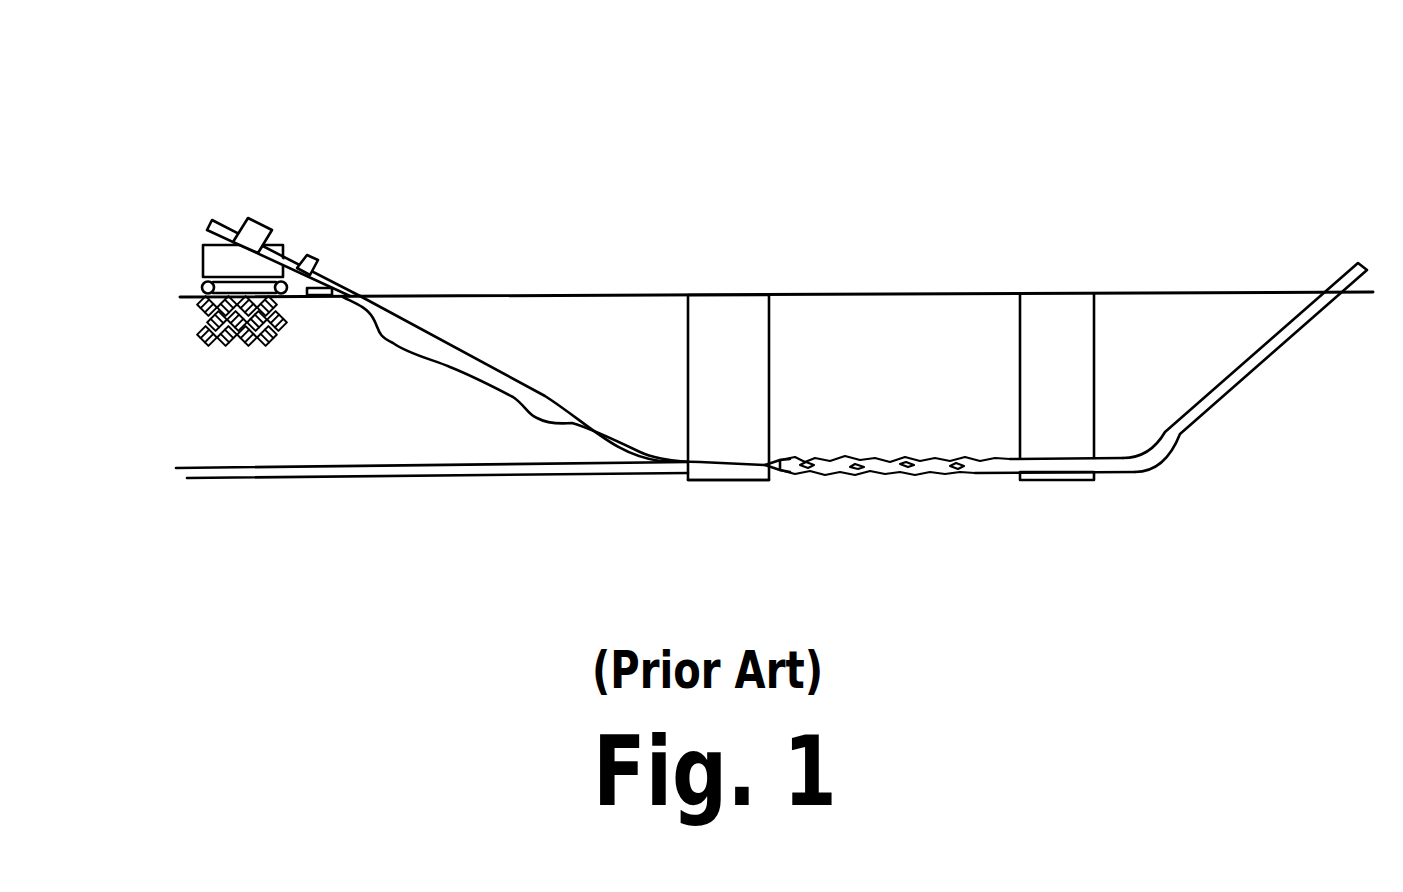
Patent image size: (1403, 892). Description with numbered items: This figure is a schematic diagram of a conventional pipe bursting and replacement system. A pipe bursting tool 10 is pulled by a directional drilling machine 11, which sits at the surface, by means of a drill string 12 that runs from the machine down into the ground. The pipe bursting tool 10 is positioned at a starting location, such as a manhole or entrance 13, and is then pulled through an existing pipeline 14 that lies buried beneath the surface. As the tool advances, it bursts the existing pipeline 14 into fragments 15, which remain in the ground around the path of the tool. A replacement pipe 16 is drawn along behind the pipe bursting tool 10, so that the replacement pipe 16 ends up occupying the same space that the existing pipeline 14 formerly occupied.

The pipe bursting tool 10 is at (771, 476).
The directional drilling machine 11 is at (203, 271).
The drill string 12 is at (352, 284).
The manhole or entrance 13 is at (1082, 376).
The existing pipeline 14 is at (617, 475).
The fragments 15 is at (948, 476).
The replacement pipe 16 is at (1357, 262).